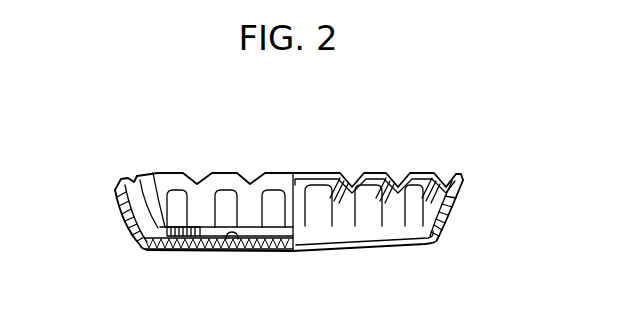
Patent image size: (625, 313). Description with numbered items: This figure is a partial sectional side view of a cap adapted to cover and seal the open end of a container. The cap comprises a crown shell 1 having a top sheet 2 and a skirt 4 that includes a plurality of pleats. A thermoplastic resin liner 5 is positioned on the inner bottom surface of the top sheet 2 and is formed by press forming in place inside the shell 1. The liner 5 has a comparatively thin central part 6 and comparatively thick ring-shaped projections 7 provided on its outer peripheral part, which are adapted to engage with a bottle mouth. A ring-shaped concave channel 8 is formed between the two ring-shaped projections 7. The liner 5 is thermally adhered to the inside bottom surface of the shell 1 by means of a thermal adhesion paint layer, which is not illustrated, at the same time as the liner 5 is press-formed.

The crown shell 1 is at (410, 255).
The top sheet 2 is at (278, 252).
The skirt 4 is at (139, 216).
The thermoplastic resin liner 5 is at (199, 227).
The central part 6 is at (227, 249).
The ring-shaped projection 7 is at (162, 228).
The ring-shaped concave channel 8 is at (155, 234).